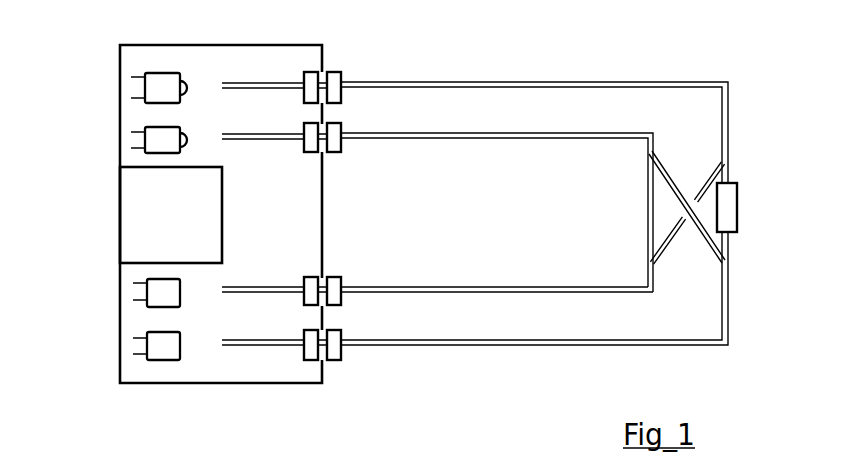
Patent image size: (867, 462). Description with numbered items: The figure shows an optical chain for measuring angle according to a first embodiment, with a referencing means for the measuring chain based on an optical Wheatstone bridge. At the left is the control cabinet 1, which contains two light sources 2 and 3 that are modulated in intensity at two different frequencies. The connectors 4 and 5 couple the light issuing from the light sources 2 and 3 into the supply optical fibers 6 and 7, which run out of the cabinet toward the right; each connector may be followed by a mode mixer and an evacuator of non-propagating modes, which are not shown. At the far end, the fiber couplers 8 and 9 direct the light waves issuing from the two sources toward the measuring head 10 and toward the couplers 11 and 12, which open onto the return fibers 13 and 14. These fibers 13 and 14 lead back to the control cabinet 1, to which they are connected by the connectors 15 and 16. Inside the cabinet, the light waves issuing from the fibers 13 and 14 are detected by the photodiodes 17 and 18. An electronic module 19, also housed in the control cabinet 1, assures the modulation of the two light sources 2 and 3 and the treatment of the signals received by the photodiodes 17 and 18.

The control cabinet 1 is at (167, 372).
The light source 2 is at (162, 138).
The light source 3 is at (167, 82).
The connector 4 is at (333, 78).
The connector 5 is at (338, 132).
The supply optical fiber 6 is at (507, 84).
The supply optical fiber 7 is at (555, 135).
The fiber coupler 8 is at (650, 153).
The fiber coupler 9 is at (719, 158).
The measuring head 10 is at (728, 212).
The coupler 11 is at (655, 265).
The coupler 12 is at (733, 262).
The fiber 13 is at (513, 290).
The fiber 14 is at (640, 344).
The connector 15 is at (338, 302).
The connector 16 is at (341, 357).
The photodiode 17 is at (160, 293).
The photodiode 18 is at (157, 343).
The electronic module 19 is at (152, 194).